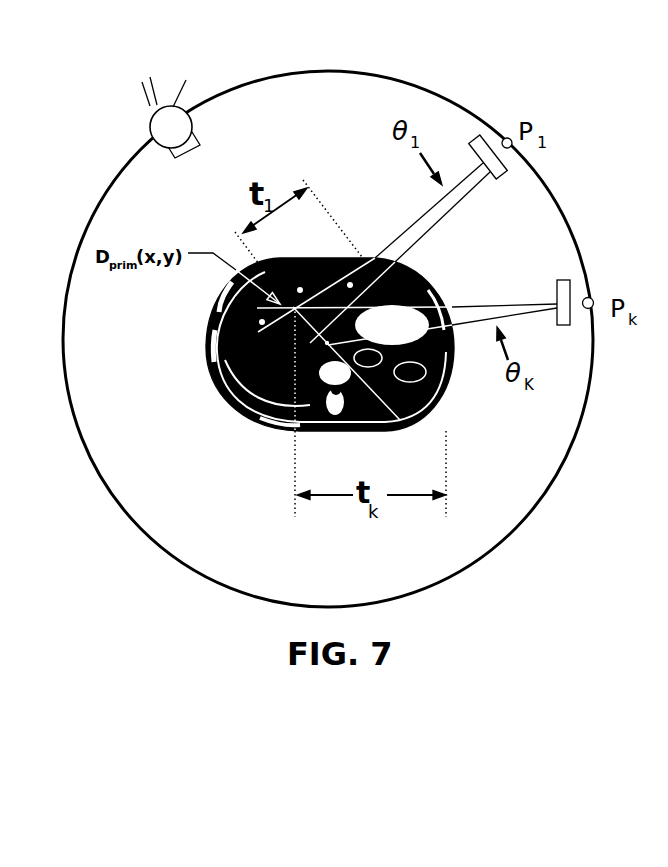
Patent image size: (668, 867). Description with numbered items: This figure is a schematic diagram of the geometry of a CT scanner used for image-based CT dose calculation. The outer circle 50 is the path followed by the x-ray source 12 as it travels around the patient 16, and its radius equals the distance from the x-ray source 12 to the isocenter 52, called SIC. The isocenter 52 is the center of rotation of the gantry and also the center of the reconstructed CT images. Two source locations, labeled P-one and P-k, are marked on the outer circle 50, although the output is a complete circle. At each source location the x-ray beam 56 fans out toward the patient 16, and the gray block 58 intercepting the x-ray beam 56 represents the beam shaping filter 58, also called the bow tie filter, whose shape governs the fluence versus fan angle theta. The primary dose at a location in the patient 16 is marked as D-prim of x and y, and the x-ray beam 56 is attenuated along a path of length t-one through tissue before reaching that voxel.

The x-ray source 12 is at (186, 80).
The patient 16 is at (208, 372).
The outer circle 50 is at (360, 72).
The isocenter 52 is at (400, 420).
The x-ray beam 56 is at (493, 292).
The beam shaping filter 58 is at (484, 135).